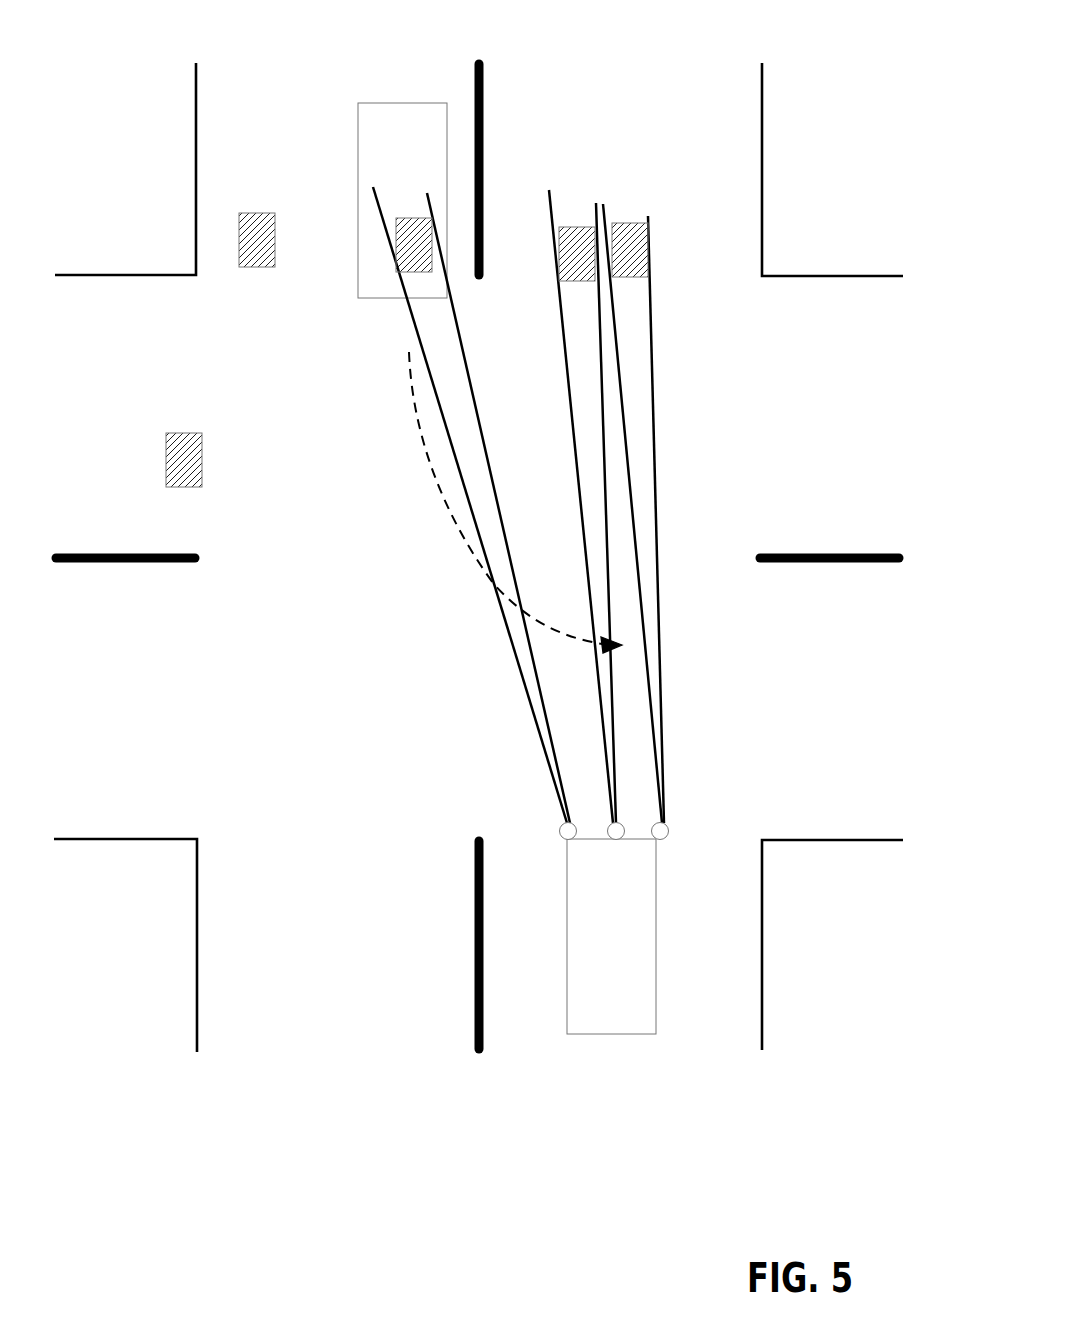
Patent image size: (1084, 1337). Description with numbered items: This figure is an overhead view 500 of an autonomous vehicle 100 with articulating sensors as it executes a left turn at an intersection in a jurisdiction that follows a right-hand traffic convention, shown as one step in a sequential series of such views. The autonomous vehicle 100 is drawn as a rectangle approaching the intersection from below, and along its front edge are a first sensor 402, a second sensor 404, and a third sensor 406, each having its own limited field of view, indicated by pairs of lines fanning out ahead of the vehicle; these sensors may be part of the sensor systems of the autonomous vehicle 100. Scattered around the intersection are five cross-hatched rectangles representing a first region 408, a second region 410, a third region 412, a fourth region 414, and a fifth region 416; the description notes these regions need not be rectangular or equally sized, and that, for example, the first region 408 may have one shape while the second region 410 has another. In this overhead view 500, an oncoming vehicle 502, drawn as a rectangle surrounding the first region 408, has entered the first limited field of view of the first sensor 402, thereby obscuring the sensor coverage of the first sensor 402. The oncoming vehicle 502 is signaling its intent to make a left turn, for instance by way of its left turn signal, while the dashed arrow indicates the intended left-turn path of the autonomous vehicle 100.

The overhead view 500 is at (848, 48).
The oncoming vehicle 502 is at (438, 132).
The autonomous vehicle 100 is at (648, 1027).
The first sensor 402 is at (560, 828).
The second sensor 404 is at (623, 833).
The third sensor 406 is at (668, 823).
The first region 408 is at (396, 257).
The second region 410 is at (559, 252).
The third region 412 is at (648, 252).
The fourth region 414 is at (239, 238).
The fifth region 416 is at (166, 456).